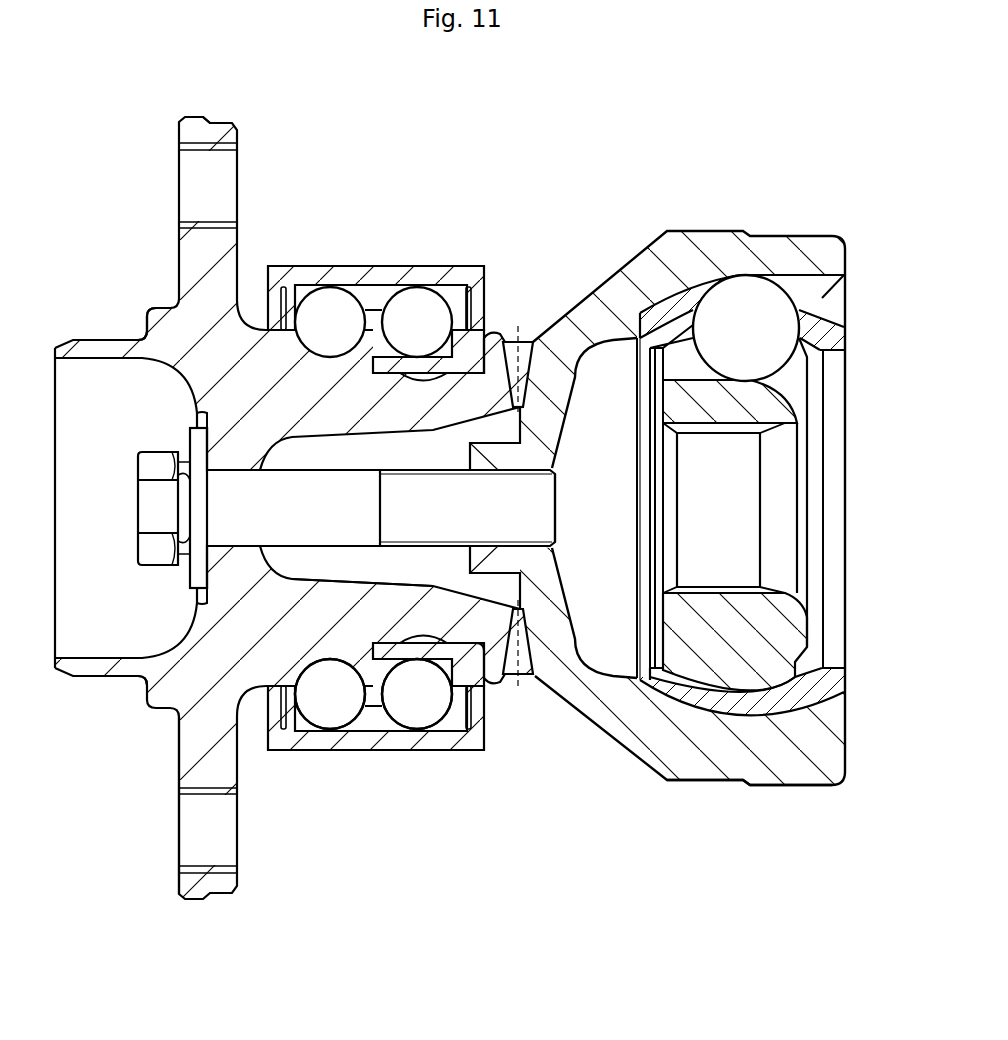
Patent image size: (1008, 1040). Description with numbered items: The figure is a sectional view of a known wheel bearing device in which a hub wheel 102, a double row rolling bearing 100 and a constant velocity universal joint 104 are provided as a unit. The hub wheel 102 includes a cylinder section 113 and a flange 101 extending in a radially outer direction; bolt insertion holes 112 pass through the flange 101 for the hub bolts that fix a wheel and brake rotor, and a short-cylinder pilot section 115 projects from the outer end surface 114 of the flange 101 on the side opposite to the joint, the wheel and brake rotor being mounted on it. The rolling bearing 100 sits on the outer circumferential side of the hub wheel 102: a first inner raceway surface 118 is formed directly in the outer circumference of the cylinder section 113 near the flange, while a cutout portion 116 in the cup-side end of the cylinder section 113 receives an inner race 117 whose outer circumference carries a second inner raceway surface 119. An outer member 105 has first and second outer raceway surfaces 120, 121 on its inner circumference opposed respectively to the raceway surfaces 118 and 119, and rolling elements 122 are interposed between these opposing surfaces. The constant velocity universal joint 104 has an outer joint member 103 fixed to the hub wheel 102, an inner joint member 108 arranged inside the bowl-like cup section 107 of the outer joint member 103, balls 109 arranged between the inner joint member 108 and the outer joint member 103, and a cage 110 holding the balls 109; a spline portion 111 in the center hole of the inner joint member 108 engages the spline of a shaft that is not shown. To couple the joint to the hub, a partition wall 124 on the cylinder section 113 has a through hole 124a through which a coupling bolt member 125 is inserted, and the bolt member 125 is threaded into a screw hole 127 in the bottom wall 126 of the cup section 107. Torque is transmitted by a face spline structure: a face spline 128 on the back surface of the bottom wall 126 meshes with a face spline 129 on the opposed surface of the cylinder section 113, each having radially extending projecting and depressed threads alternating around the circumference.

The rolling bearing 100 is at (383, 515).
The flange 101 is at (185, 248).
The hub wheel 102 is at (150, 328).
The outer joint member 103 is at (618, 722).
The constant velocity universal joint 104 is at (710, 503).
The outer member 105 is at (455, 750).
The bowl-like section (cup section) 107 is at (712, 790).
The inner joint member 108 is at (810, 620).
The balls 109 is at (757, 295).
The cage 110 is at (815, 323).
The spline portion 111 is at (735, 428).
The bolt insertion holes 112 is at (218, 162).
The cylinder section 113 is at (388, 633).
The outer end surface 114 is at (177, 757).
The pilot section 115 is at (103, 680).
The cutout portion 116 is at (458, 360).
The inner race 117 is at (496, 676).
The first inner raceway surface 118 is at (320, 350).
The second inner raceway surface 119 is at (432, 335).
The first outer raceway surface 120 is at (340, 713).
The second outer raceway surface 121 is at (407, 713).
The rolling elements 122 is at (398, 300).
The partition wall 124 is at (217, 565).
The through hole 124a is at (235, 545).
The coupling bolt member 125 is at (147, 493).
The bottom wall 126 is at (568, 377).
The screw hole 127 is at (523, 543).
The face spline 128 is at (522, 358).
The face spline 129 is at (511, 365).